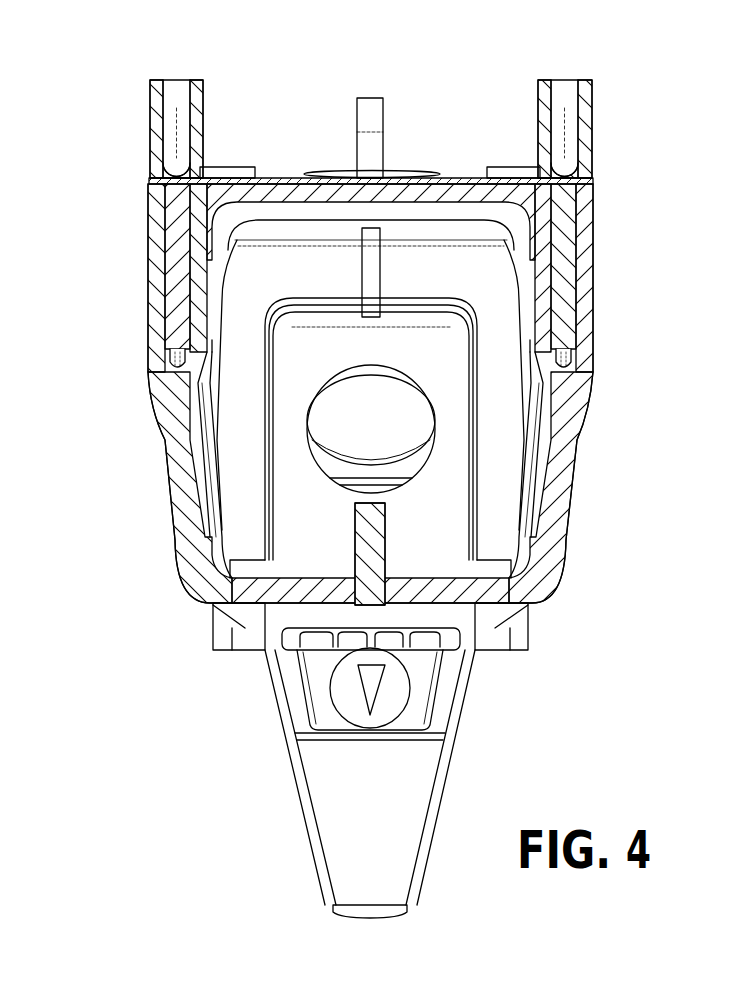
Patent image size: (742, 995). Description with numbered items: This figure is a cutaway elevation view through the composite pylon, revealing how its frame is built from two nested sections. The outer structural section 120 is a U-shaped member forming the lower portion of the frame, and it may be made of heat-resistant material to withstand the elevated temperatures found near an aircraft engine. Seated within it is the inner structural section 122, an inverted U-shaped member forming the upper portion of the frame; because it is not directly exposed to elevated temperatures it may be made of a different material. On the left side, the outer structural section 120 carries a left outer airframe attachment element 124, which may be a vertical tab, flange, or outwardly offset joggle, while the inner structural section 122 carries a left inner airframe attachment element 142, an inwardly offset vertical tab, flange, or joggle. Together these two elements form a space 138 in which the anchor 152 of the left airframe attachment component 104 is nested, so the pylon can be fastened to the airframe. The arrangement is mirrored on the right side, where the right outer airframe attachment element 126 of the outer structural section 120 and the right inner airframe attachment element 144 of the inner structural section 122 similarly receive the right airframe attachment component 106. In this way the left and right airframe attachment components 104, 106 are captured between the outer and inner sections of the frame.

The left airframe attachment component 104 is at (143, 120).
The right airframe attachment component 106 is at (603, 118).
The inner structural section 122 is at (416, 146).
The left outer airframe attachment element 124 is at (149, 215).
The anchor 152 is at (168, 270).
The left inner airframe attachment element 142 is at (193, 327).
The space 138 is at (165, 372).
The right outer airframe attachment element 126 is at (593, 248).
The right inner airframe attachment element 144 is at (550, 312).
The outer structural section 120 is at (575, 560).